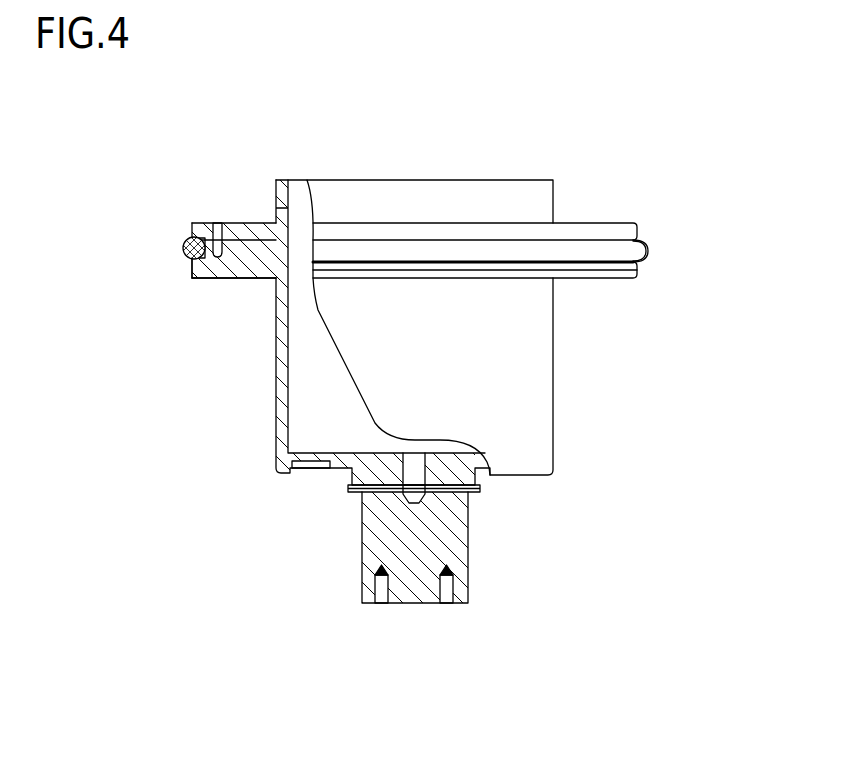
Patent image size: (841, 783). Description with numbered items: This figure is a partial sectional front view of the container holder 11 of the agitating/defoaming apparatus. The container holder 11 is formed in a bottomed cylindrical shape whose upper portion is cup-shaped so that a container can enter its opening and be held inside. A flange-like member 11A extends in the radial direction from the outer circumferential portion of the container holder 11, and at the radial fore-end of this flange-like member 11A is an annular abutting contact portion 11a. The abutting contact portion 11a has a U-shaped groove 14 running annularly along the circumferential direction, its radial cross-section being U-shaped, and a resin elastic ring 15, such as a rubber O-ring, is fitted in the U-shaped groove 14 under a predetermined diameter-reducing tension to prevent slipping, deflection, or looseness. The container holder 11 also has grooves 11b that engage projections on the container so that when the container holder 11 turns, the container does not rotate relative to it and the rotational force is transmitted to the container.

The container holder 11 is at (638, 150).
The flange-like member 11A is at (246, 223).
The abutting contact portion 11a is at (177, 228).
The groove 11b is at (283, 184).
The U-shaped groove 14 is at (190, 263).
The resin elastic ring 15 is at (183, 250).